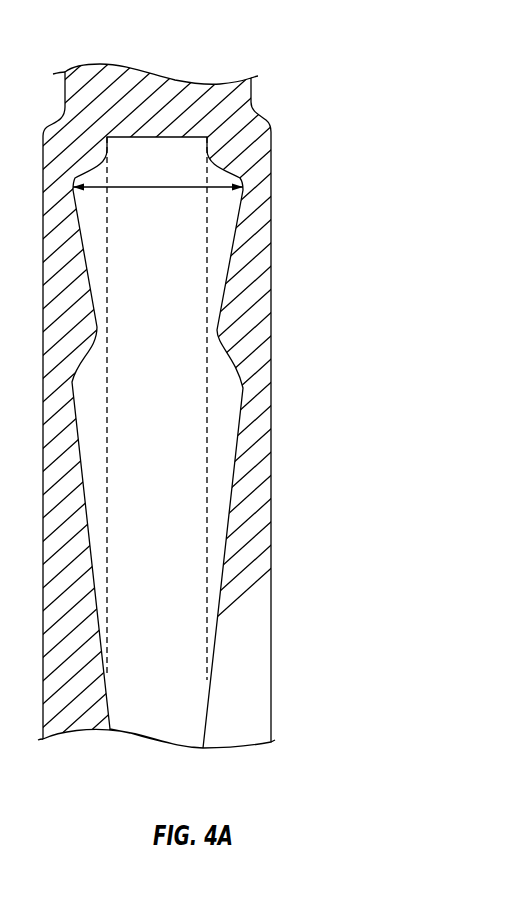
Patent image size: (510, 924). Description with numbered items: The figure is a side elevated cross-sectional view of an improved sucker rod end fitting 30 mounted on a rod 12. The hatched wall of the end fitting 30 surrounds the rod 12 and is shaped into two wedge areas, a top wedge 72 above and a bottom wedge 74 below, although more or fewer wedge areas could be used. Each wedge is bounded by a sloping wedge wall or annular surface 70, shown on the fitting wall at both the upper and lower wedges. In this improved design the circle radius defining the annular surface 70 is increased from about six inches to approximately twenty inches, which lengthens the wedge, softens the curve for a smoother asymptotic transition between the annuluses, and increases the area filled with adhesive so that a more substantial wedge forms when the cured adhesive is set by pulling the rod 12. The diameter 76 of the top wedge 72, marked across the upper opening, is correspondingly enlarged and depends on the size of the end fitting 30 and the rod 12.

The end fitting 30 is at (311, 117).
The rod 12 is at (143, 527).
The wedge wall or annular surface 70 is at (230, 262).
The top wedge 72 is at (320, 165).
The bottom wedge 74 is at (319, 339).
The diameter 76 is at (150, 188).